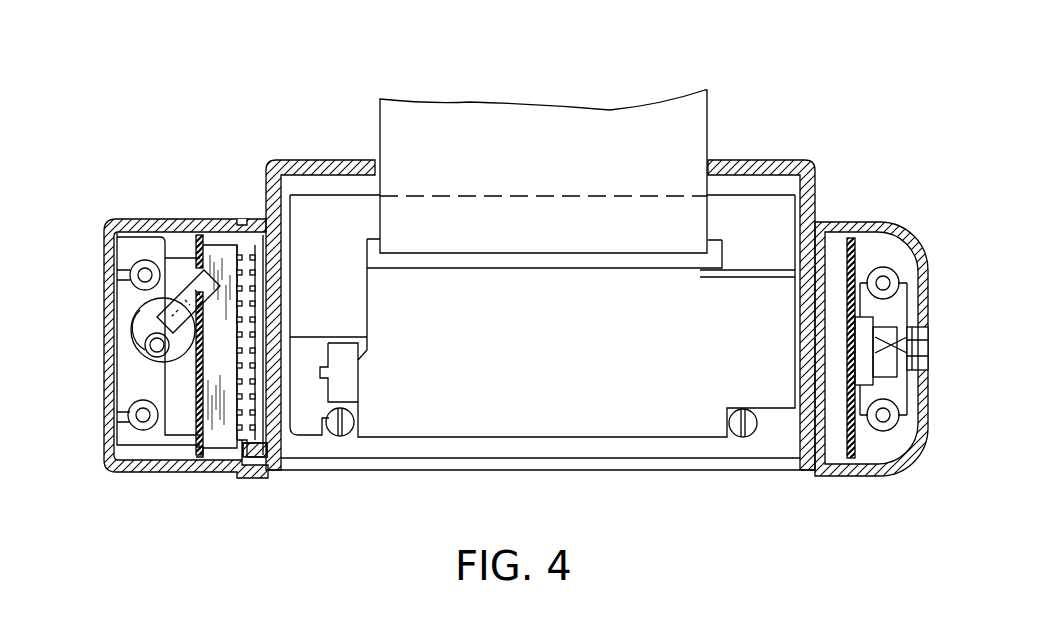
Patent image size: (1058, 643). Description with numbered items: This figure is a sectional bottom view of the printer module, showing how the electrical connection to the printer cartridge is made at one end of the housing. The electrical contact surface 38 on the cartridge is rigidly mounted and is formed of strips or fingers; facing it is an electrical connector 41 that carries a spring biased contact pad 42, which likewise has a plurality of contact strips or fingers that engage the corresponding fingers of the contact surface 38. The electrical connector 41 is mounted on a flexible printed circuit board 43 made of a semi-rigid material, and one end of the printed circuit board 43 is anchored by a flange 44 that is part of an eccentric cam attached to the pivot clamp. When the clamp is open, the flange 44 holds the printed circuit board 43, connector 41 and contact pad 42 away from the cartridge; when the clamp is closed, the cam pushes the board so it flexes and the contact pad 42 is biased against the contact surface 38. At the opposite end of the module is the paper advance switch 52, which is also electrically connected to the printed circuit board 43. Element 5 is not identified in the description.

The roller 5 is at (133, 333).
The electrical contact surface 38 is at (250, 290).
The electrical connector 41 is at (199, 455).
The spring biased contact pad 42 is at (243, 452).
The flexible printed circuit board 43 is at (199, 235).
The flange 44 is at (212, 265).
The paper advance switch 52 is at (929, 343).